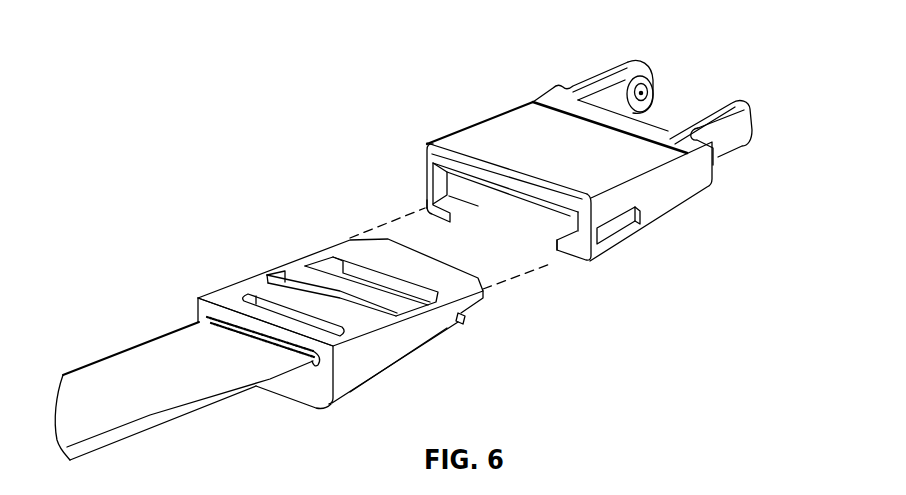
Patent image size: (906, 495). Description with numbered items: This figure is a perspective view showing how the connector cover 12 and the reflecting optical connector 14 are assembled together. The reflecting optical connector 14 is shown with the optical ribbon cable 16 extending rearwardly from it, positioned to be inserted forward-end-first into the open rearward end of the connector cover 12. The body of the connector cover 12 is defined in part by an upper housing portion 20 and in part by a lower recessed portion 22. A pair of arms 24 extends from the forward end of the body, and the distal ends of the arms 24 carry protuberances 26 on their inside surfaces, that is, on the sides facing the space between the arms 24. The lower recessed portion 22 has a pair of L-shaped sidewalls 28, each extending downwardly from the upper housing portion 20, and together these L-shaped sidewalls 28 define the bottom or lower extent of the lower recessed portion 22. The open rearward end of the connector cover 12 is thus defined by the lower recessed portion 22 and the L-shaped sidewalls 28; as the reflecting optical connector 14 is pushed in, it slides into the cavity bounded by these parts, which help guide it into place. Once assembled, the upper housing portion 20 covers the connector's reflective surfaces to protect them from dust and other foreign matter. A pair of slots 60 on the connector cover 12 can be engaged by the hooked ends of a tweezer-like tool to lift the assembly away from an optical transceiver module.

The connector cover 12 is at (575, 156).
The reflecting optical connector 14 is at (247, 279).
The optical ribbon cable 16 is at (190, 417).
The upper housing portion 20 is at (510, 128).
The lower recessed portion 22 is at (528, 197).
The arms 24 is at (650, 67).
The protuberances 26 is at (651, 100).
The L-shaped sidewalls 28 is at (427, 183).
The slots 60 is at (617, 230).